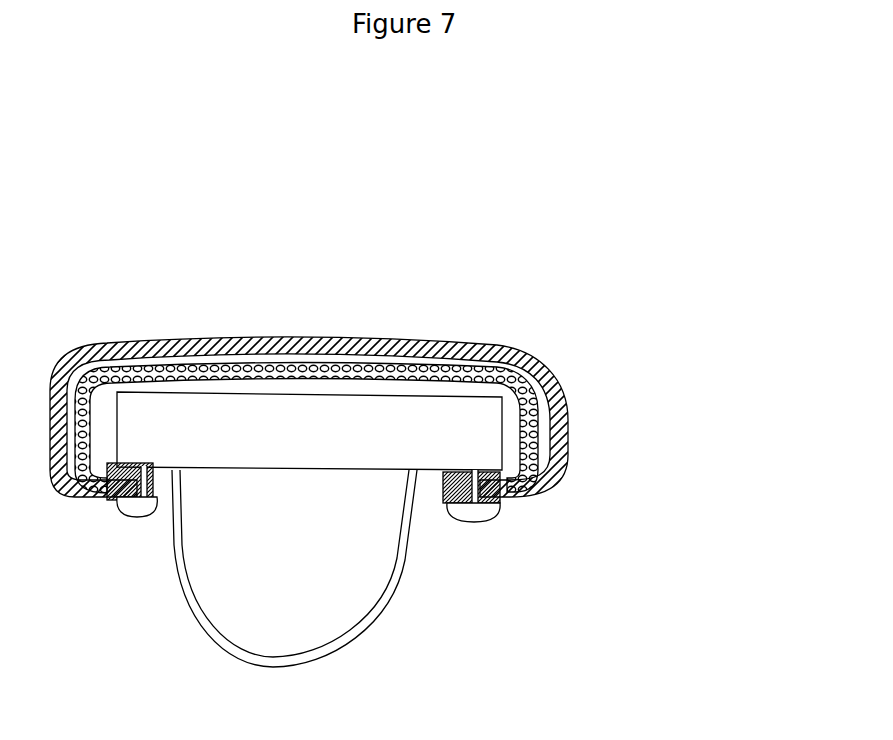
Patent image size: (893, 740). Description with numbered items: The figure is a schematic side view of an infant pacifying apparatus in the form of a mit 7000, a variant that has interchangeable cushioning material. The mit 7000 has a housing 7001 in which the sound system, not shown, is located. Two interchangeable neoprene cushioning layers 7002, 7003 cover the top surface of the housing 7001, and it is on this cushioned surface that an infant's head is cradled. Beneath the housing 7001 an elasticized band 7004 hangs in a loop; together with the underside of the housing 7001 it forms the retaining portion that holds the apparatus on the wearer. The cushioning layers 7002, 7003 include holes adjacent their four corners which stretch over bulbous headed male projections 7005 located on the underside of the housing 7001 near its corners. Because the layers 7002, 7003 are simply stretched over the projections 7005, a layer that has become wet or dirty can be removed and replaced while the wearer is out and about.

The mit 7000 is at (553, 323).
The housing 7001 is at (312, 444).
The cushioning layer 7002 is at (333, 338).
The cushioning layer 7003 is at (220, 365).
The elasticized band 7004 is at (385, 612).
The bulbous headed male projection 7005 is at (480, 530).